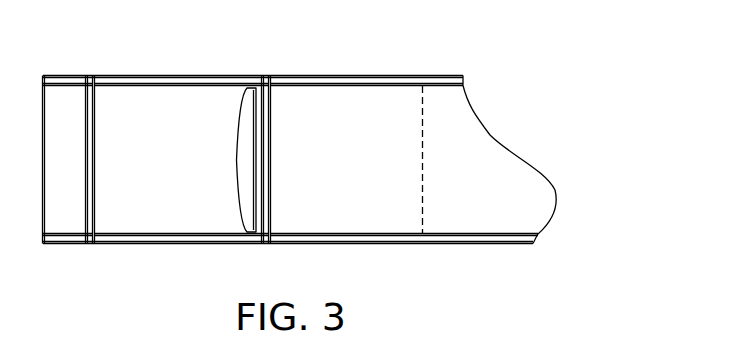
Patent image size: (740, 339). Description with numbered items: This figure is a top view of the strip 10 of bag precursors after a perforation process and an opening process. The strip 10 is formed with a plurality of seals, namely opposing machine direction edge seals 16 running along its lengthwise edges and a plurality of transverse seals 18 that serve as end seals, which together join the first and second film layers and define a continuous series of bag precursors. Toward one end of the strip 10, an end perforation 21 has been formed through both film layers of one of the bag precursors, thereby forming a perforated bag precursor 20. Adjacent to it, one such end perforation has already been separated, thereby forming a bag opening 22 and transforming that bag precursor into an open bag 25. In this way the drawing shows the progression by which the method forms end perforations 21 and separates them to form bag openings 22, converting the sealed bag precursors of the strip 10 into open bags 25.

The strip 10 is at (545, 135).
The machine direction edge seal 16 is at (140, 78).
The transverse seal 18 is at (95, 170).
The perforated bag precursor 20 is at (358, 218).
The end perforation 21 is at (423, 152).
The bag opening 22 is at (233, 152).
The open bag 25 is at (202, 218).